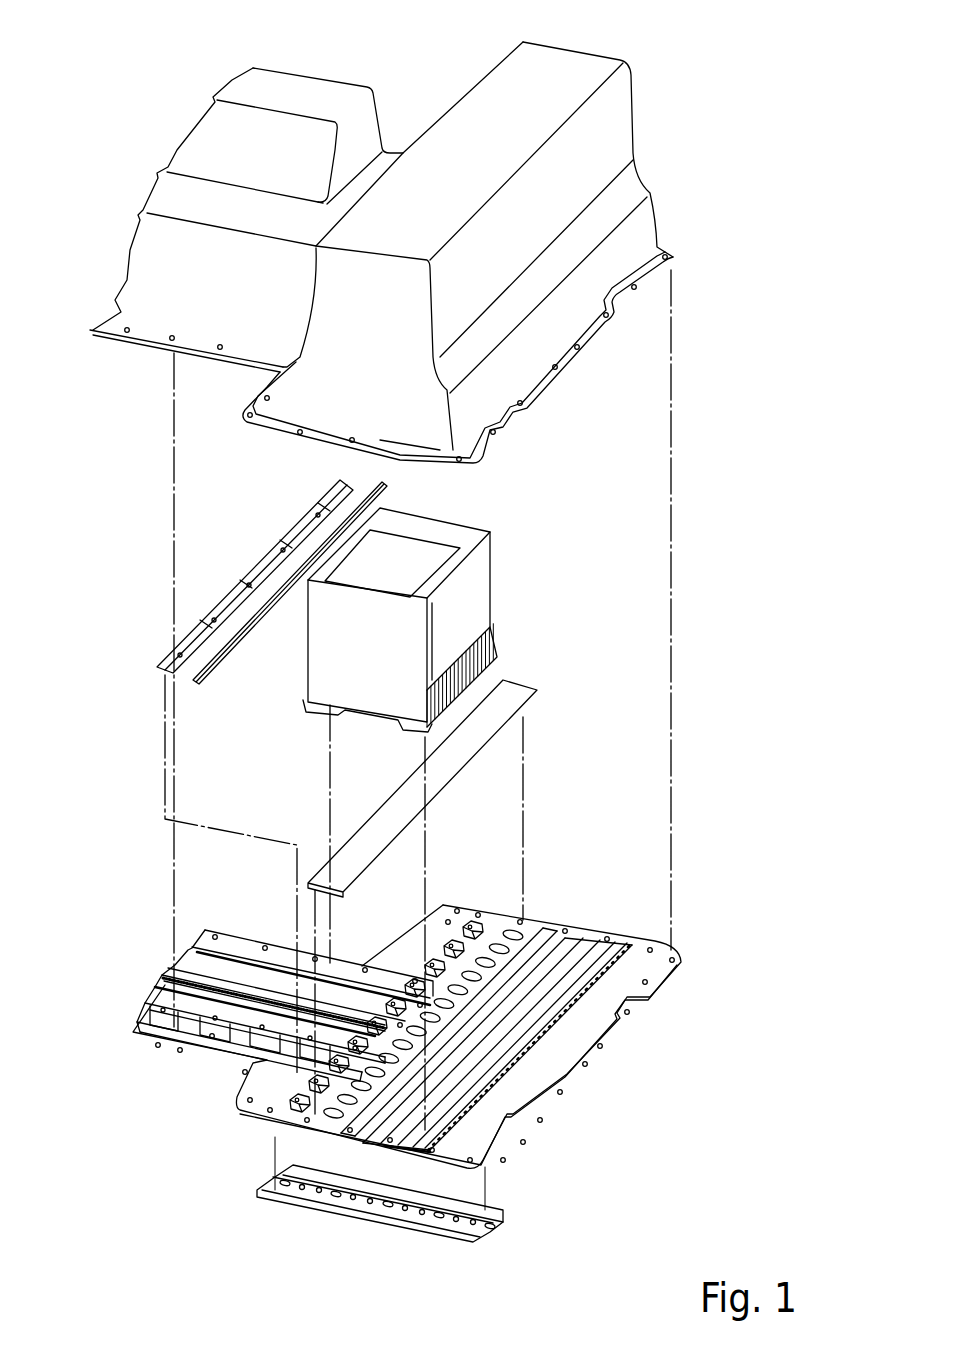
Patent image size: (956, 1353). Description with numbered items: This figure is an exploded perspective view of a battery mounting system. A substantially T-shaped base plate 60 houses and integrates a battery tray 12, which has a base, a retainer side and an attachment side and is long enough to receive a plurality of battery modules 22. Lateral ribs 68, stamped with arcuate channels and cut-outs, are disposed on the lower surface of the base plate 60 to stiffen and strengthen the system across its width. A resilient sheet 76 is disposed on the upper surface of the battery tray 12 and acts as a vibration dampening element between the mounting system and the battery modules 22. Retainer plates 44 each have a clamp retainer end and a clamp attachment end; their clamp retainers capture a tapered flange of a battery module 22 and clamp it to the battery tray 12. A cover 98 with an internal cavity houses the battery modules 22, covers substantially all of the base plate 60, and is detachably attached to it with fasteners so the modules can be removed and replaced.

The battery tray 12 is at (430, 1007).
The battery module 22 is at (465, 601).
The retainer plate 44 is at (252, 562).
The base plate 60 is at (686, 964).
The lateral rib 68 is at (515, 1208).
The resilient sheet 76 is at (521, 686).
The cover 98 is at (445, 112).